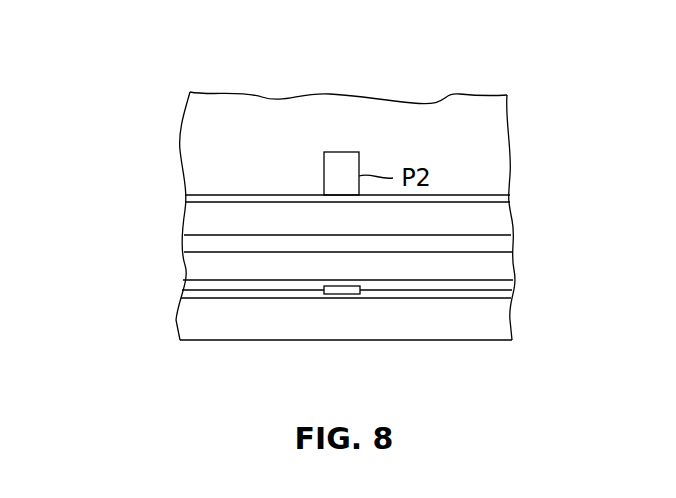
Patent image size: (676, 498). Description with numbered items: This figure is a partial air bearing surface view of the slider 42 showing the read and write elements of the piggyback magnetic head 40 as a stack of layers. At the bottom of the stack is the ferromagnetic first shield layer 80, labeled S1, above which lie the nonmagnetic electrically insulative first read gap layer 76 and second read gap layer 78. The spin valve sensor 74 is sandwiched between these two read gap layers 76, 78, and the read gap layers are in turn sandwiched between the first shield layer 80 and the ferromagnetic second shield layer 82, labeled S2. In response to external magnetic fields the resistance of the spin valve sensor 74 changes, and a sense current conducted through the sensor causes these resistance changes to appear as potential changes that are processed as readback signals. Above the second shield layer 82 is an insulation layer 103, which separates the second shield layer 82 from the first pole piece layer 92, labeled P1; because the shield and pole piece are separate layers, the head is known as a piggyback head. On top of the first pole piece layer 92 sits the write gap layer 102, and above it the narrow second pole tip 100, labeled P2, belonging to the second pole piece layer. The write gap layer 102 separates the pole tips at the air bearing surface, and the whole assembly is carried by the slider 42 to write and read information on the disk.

The combined read and write magnetic head 40 is at (535, 107).
The slider 42 is at (190, 122).
The spin valve sensor 74 is at (340, 292).
The first read gap layer 76 is at (245, 298).
The second read gap layer 78 is at (468, 286).
The first shield layer 80 is at (500, 322).
The second shield layer 82 is at (188, 270).
The first pole piece layer 92 is at (190, 218).
The second pole tip 100 is at (338, 158).
The write gap layer 102 is at (258, 195).
The insulation layer 103 is at (498, 243).